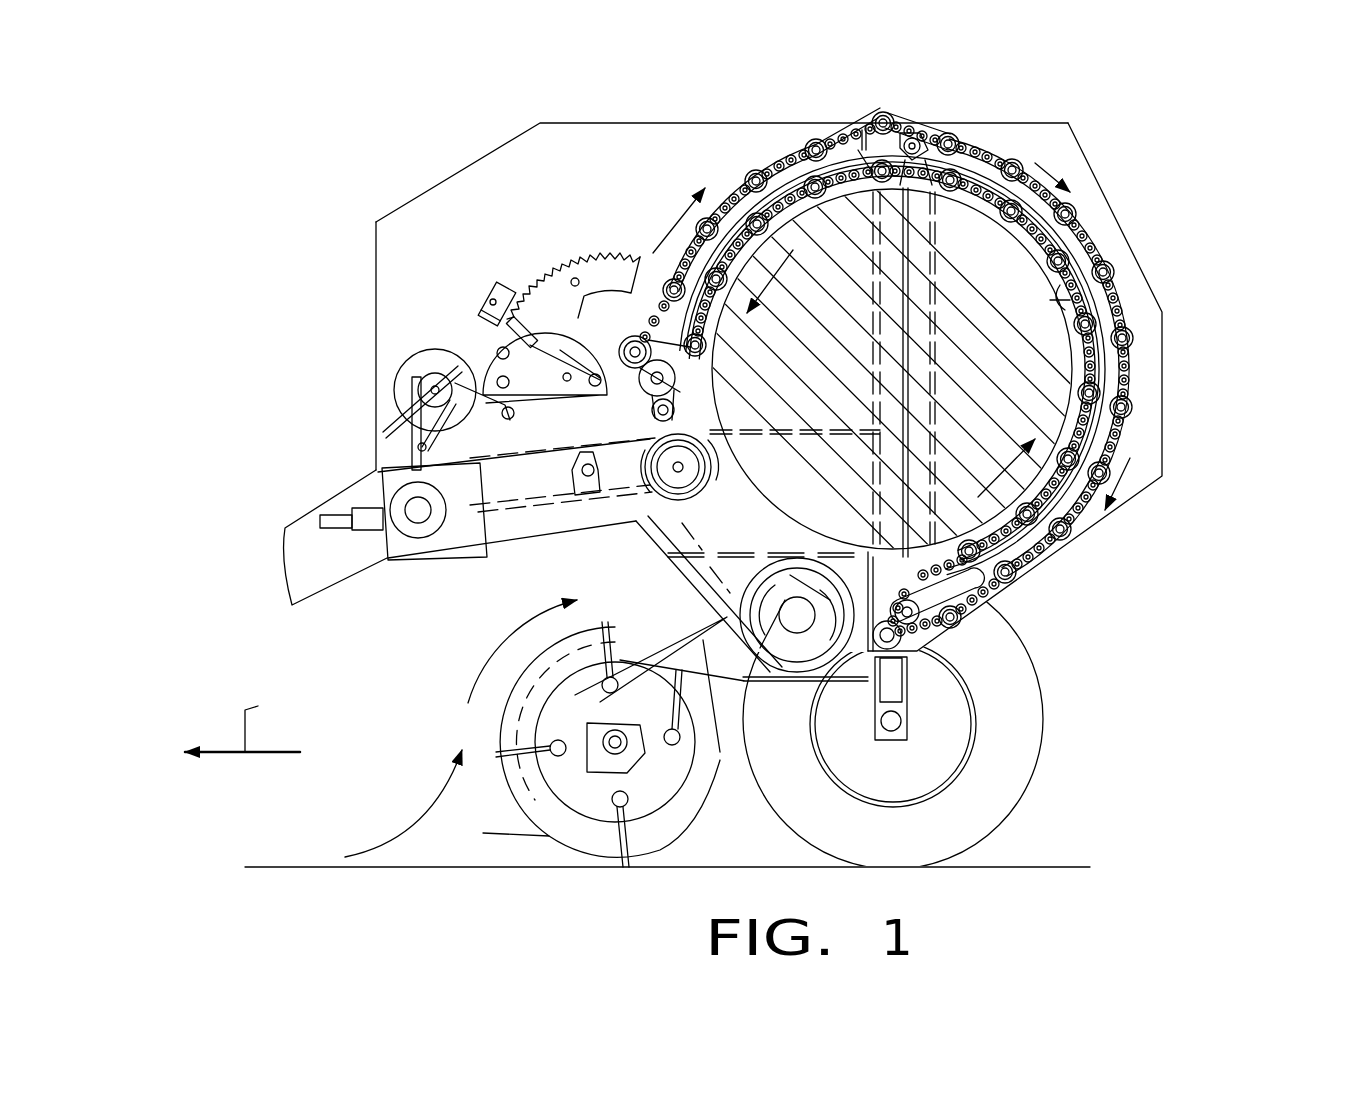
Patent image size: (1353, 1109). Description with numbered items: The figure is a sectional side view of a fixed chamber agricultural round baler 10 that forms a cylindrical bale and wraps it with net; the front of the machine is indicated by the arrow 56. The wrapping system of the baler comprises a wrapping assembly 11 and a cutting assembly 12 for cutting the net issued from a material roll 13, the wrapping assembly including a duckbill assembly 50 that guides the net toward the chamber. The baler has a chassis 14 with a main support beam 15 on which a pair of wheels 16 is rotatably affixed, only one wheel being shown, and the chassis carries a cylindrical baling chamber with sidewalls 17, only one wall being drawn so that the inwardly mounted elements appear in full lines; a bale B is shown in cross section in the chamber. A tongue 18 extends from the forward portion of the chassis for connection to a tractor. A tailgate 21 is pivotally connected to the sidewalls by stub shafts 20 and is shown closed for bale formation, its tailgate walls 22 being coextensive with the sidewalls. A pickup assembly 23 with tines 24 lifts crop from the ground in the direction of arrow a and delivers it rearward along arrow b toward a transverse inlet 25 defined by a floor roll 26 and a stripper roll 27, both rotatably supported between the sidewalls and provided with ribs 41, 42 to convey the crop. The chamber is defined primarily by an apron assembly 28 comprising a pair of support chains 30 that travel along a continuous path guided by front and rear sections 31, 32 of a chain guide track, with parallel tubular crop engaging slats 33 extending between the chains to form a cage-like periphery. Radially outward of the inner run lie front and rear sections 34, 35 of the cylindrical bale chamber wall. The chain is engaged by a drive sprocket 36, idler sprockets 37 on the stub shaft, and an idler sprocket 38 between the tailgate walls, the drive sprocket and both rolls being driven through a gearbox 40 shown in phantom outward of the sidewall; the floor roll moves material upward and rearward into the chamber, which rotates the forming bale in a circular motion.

The agricultural round baler 10 is at (1235, 105).
The wrapping assembly 11 is at (487, 272).
The cutting assembly 12 is at (640, 495).
The material roll 13 is at (407, 360).
The chassis 14 is at (628, 123).
The main support beam 15 is at (945, 650).
The wheels 16 is at (1045, 778).
The sidewalls 17 is at (478, 183).
The tongue 18 is at (313, 576).
The stub shafts 20 is at (898, 128).
The tailgate 21 is at (1145, 250).
The tailgate walls 22 is at (1147, 463).
The pickup assembly 23 is at (478, 726).
The tines 24 is at (530, 835).
The transverse inlet 25 is at (672, 540).
The floor roll 26 is at (778, 683).
The stripper roll 27 is at (550, 483).
The apron assembly 28 is at (1085, 222).
The support chains 30 is at (1120, 306).
The front section of chain guide track 31 is at (735, 185).
The rear section of chain guide track 32 is at (1117, 297).
The crop engaging slats 33 is at (815, 150).
The front section of bale chamber wall 34 is at (860, 157).
The rear section of bale chamber wall 35 is at (1020, 150).
The drive sprocket 36 is at (645, 340).
The idler sprockets 37 is at (905, 128).
The idler sprocket 38 is at (921, 604).
The gearbox 40 is at (418, 540).
The ribs 41 is at (742, 585).
The ribs 42 is at (640, 460).
The duckbill assembly 50 is at (522, 285).
The arrow indicating front of baler 56 is at (242, 722).
The bale B is at (1057, 360).
The direction arrow a is at (400, 810).
The direction arrow b is at (500, 635).